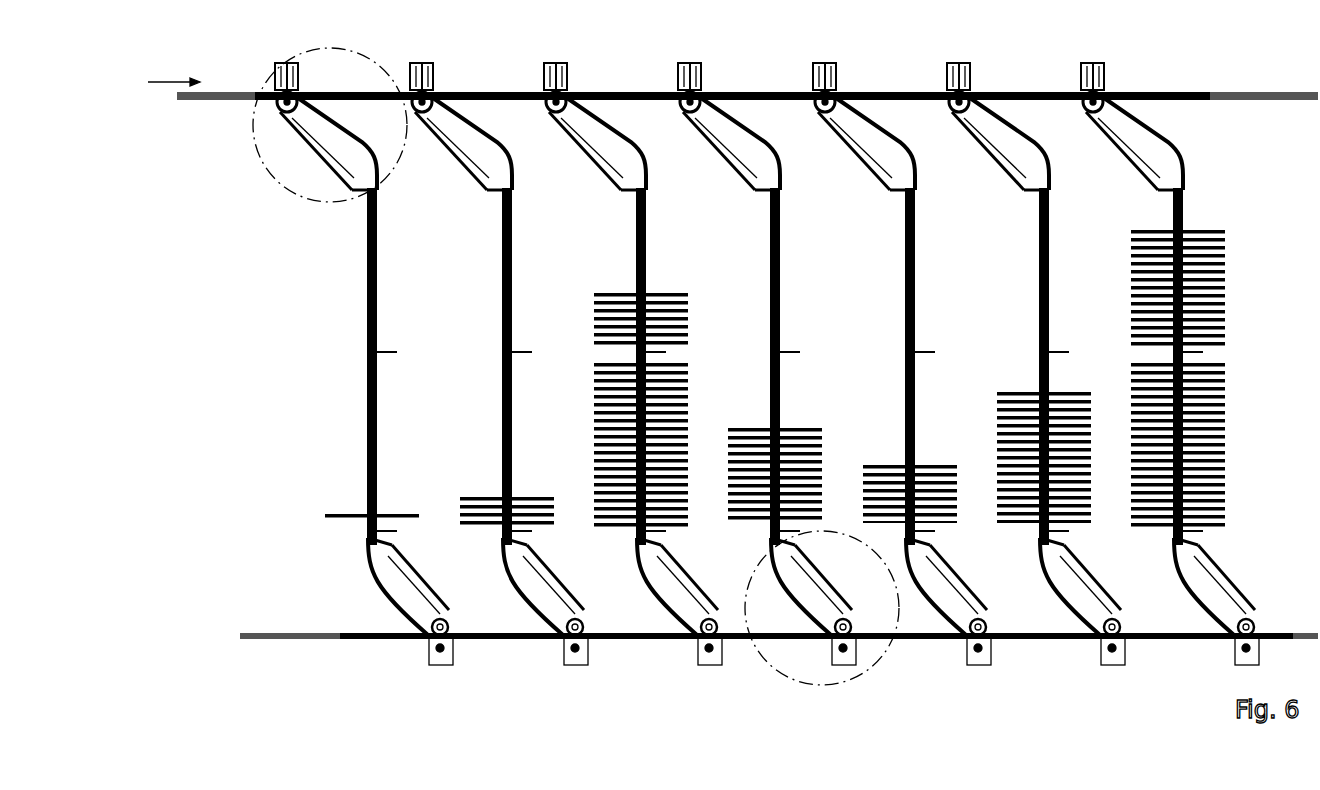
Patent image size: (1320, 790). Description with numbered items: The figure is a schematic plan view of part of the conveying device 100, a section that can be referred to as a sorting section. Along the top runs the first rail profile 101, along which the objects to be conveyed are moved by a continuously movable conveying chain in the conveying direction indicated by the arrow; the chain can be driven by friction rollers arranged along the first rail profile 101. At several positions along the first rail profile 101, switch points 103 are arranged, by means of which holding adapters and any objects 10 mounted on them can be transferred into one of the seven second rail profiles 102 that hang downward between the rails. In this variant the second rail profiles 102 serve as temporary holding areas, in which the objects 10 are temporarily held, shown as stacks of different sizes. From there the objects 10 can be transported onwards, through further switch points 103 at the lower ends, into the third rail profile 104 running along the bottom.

The conveying device 100 is at (188, 231).
The first rail profile 101 is at (213, 90).
The second rail profile 102 is at (377, 252).
The switch point 103 is at (337, 53).
The third rail profile 104 is at (293, 640).
The object 10 is at (340, 512).